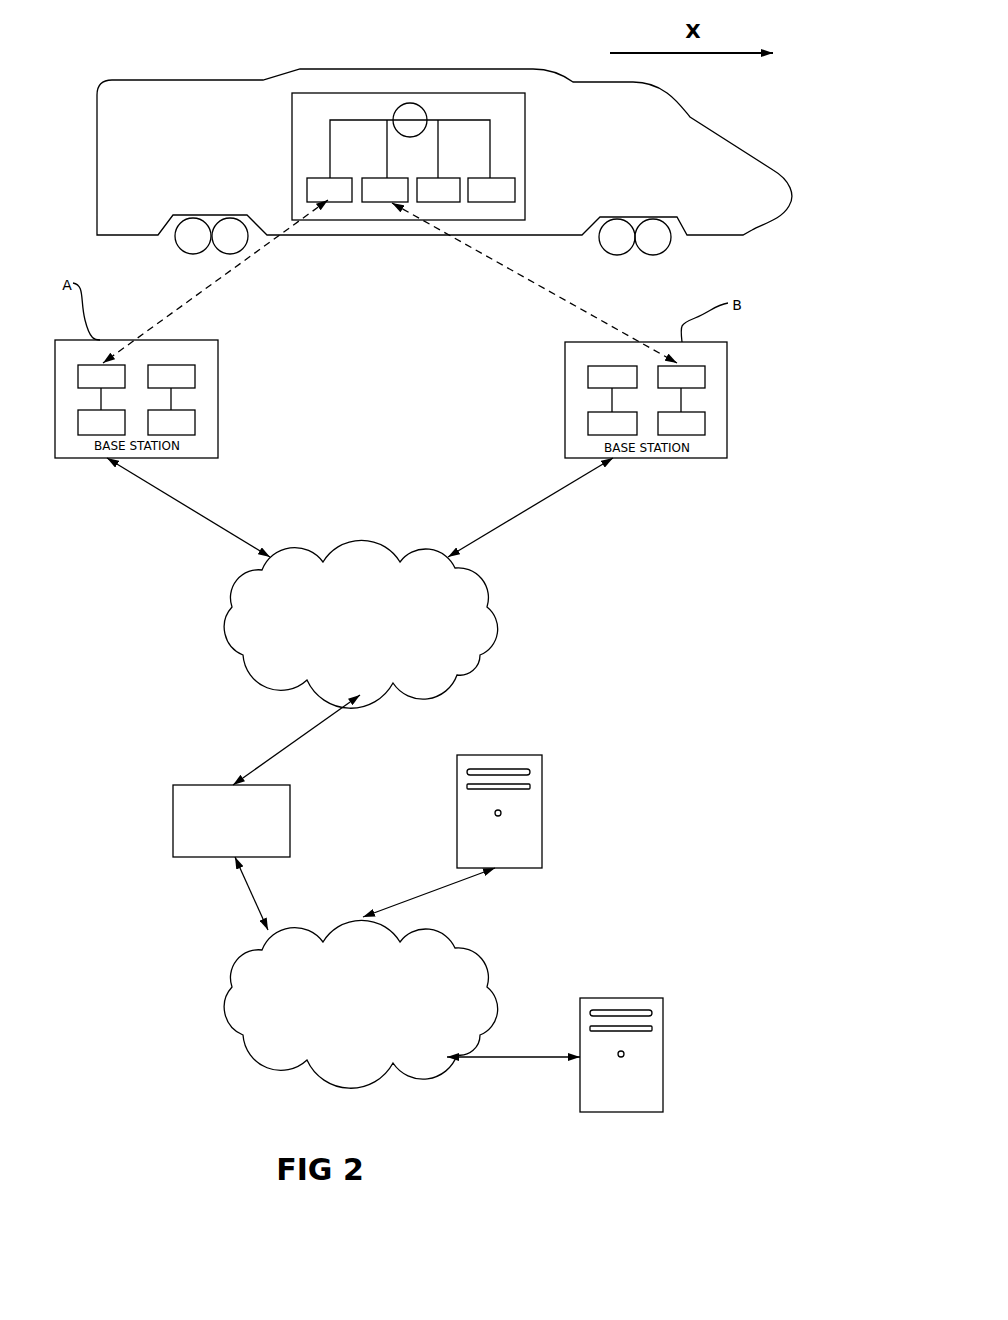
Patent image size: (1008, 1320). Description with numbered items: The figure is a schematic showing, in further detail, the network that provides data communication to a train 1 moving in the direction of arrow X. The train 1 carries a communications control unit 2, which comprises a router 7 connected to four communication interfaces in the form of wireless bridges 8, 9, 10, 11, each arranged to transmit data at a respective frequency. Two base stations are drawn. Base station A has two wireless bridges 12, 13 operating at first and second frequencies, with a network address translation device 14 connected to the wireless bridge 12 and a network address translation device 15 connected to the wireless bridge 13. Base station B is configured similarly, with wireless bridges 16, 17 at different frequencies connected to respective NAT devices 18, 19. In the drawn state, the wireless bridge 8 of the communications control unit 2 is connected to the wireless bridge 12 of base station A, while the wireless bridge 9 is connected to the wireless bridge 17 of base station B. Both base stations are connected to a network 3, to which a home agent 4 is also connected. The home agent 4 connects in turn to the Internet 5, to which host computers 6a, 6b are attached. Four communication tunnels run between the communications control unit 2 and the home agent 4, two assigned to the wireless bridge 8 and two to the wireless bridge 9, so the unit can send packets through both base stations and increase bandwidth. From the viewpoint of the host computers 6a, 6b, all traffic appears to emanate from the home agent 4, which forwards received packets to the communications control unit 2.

The train 1 is at (713, 130).
The communications control unit 2 is at (525, 153).
The network 3 is at (448, 675).
The home agent 4 is at (173, 818).
The Internet 5 is at (492, 953).
The host computer 6a is at (542, 815).
The host computer 6b is at (663, 1065).
The router 7 is at (410, 103).
The wireless bridge 8 is at (307, 192).
The wireless bridge 9 is at (367, 202).
The wireless bridge 10 is at (453, 202).
The wireless bridge 11 is at (515, 190).
The wireless bridge 12 is at (78, 378).
The wireless bridge 13 is at (195, 375).
The network address translation device 14 is at (78, 422).
The network address translation device 15 is at (195, 417).
The wireless bridge 16 is at (588, 378).
The wireless bridge 17 is at (705, 375).
The network address translation device 18 is at (588, 423).
The network address translation device 19 is at (705, 425).